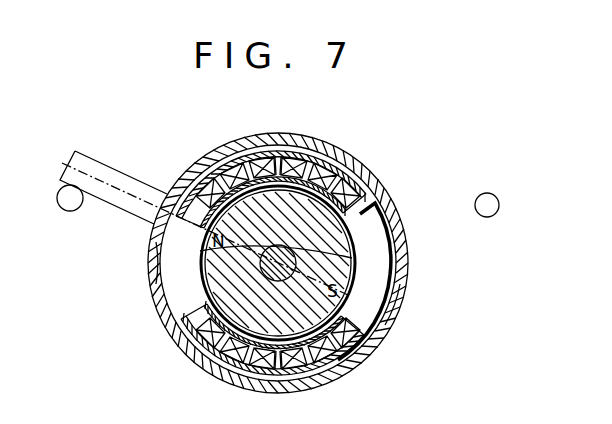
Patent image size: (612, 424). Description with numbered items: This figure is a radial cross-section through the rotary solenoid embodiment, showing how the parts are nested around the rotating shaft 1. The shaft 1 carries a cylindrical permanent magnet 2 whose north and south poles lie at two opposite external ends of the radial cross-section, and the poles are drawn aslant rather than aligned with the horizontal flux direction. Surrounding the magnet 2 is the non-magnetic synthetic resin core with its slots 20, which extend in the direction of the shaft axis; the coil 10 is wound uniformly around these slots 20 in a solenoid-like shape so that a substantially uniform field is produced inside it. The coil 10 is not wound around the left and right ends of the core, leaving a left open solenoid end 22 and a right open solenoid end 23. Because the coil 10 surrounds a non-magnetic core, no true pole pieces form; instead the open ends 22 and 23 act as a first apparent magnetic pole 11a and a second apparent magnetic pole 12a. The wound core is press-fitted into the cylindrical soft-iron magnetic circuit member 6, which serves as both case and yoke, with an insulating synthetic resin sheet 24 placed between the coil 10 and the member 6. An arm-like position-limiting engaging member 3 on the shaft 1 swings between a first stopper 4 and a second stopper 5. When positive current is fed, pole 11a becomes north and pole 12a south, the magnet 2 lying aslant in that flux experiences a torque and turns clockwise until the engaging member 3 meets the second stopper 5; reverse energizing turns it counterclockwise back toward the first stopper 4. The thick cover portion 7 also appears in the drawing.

The rotating shaft 1 is at (398, 247).
The permanent magnet 2 is at (392, 268).
The position-limiting engaging member 3 is at (111, 167).
The first stopper 4 is at (58, 211).
The second stopper 5 is at (485, 192).
The magnetic circuit member 6 is at (162, 328).
The casing cover portion 7 is at (370, 333).
The coil 10 is at (250, 150).
The first apparent magnetic pole 11a is at (164, 296).
The second apparent magnetic pole 12a is at (398, 290).
The slots 20 is at (370, 188).
The left open solenoid end 22 is at (164, 268).
The right open solenoid end 23 is at (386, 312).
The insulating synthetic resin sheet 24 is at (205, 170).